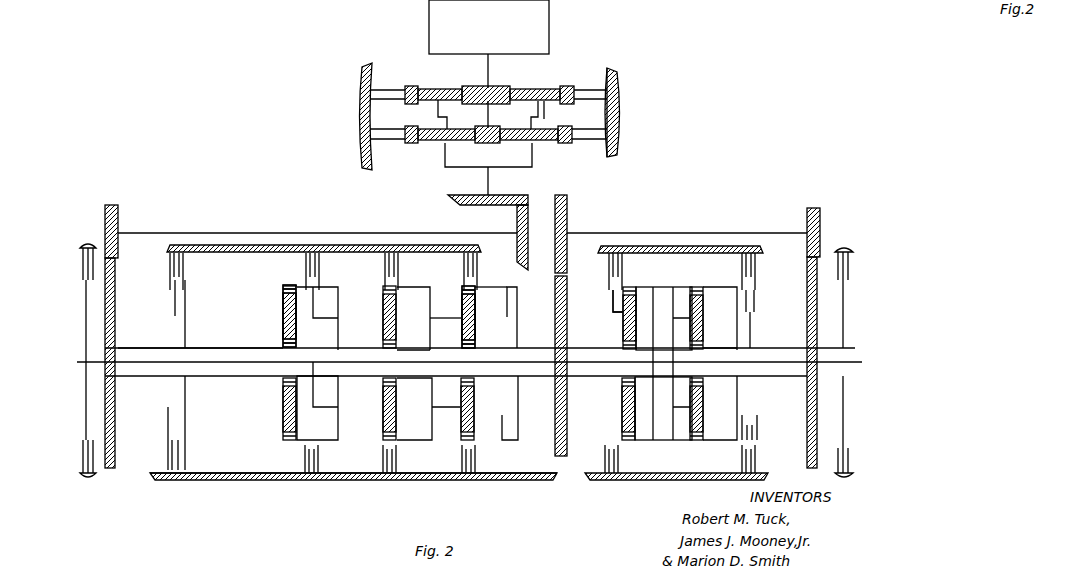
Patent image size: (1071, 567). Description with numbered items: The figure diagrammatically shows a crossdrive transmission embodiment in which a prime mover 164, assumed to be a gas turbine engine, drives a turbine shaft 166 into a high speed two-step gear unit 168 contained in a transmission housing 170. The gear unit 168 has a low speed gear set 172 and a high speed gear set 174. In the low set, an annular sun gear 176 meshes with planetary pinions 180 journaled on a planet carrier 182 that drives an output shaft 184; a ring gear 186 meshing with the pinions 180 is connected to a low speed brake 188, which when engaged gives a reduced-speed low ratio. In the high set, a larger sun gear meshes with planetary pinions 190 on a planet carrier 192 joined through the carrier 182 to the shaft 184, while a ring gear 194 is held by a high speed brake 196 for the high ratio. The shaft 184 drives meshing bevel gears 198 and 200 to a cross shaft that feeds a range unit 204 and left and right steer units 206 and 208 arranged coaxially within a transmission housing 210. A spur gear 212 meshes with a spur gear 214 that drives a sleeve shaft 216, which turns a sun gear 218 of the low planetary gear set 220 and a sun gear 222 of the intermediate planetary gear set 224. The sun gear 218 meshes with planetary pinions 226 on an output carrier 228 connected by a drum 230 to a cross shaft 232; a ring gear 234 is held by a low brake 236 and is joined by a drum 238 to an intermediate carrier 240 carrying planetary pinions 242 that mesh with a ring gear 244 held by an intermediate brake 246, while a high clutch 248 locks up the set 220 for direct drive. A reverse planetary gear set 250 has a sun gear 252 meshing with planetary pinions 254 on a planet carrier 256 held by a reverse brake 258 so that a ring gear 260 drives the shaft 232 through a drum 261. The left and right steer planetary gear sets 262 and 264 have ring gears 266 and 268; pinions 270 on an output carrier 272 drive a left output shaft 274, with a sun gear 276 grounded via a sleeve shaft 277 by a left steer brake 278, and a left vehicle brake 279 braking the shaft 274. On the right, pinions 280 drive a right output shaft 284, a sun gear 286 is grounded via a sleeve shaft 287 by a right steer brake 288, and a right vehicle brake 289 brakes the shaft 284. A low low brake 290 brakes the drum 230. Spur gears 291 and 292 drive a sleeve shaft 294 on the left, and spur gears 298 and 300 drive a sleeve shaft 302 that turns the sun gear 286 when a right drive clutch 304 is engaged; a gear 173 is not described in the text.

The prime mover 164 is at (546, 12).
The turbine shaft 166 is at (488, 62).
The high speed two-step gear unit 168 is at (624, 128).
The transmission housing 170 is at (618, 70).
The low speed gear set 172 is at (553, 148).
The gear 173 is at (478, 88).
The high speed gear set 174 is at (559, 88).
The sun gear 176 is at (484, 144).
The planetary pinions 180 is at (479, 114).
The planet carrier 182 is at (440, 155).
The output shaft 184 is at (488, 182).
The ring gear 186 is at (566, 143).
The low speed brake 188 is at (580, 140).
The planetary pinions 190 is at (524, 88).
The planet carrier 192 is at (541, 114).
The ring gear 194 is at (566, 89).
The high speed brake 196 is at (618, 100).
The bevel gear 198 is at (478, 206).
The bevel gear 200 is at (553, 262).
The range unit 204 is at (523, 485).
The left steer unit 206 is at (306, 489).
The right steer unit 208 is at (652, 487).
The transmission housing 210 is at (256, 482).
The spur gear 212 is at (567, 224).
The spur gear 214 is at (568, 335).
The sleeve shaft 216 is at (517, 347).
The sun gear 218 is at (390, 365).
The low planetary gear set 220 is at (383, 332).
The sun gear 222 is at (476, 347).
The intermediate planetary gear set 224 is at (459, 338).
The planetary pinions 226 is at (462, 301).
The output carrier 228 is at (384, 316).
The drum 230 is at (322, 280).
The cross shaft 232 is at (392, 244).
The ring gear 234 is at (400, 288).
The low brake 236 is at (398, 262).
The drum 238 is at (413, 442).
The intermediate carrier 240 is at (415, 318).
The planetary pinions 242 is at (461, 400).
The ring gear 244 is at (477, 295).
The intermediate brake 246 is at (477, 268).
The high clutch 248 is at (518, 309).
The reverse planetary gear set 250 is at (626, 346).
The sun gear 252 is at (628, 380).
The planetary pinions 254 is at (627, 292).
The planet carrier 256 is at (622, 302).
The reverse brake 258 is at (614, 262).
The ring gear 260 is at (633, 300).
The drum 261 is at (667, 290).
The left steer planetary gear set 262 is at (281, 324).
The right steer planetary gear set 264 is at (681, 333).
The left steer ring gear 266 is at (286, 290).
The right steer ring gear 268 is at (698, 292).
The planetary pinions 270 is at (283, 298).
The output carrier 272 is at (317, 318).
The left output shaft 274 is at (158, 364).
The sun gear 276 is at (290, 352).
The sleeve shaft 277 is at (205, 348).
The left steer brake 278 is at (190, 256).
The left vehicle brake 279 is at (80, 262).
The pinions 280 is at (720, 318).
The right output shaft 284 is at (838, 365).
The sun gear 286 is at (699, 340).
The sleeve shaft 287 is at (722, 354).
The right steer brake 288 is at (757, 270).
The right vehicle brake 289 is at (846, 252).
The low low brake 290 is at (322, 262).
The spur gear 291 is at (112, 205).
The spur gear 292 is at (118, 270).
The sleeve shaft 294 is at (130, 348).
The spur gear 298 is at (820, 215).
The spur gear 300 is at (807, 268).
The sleeve shaft 302 is at (777, 347).
The right drive clutch 304 is at (757, 428).